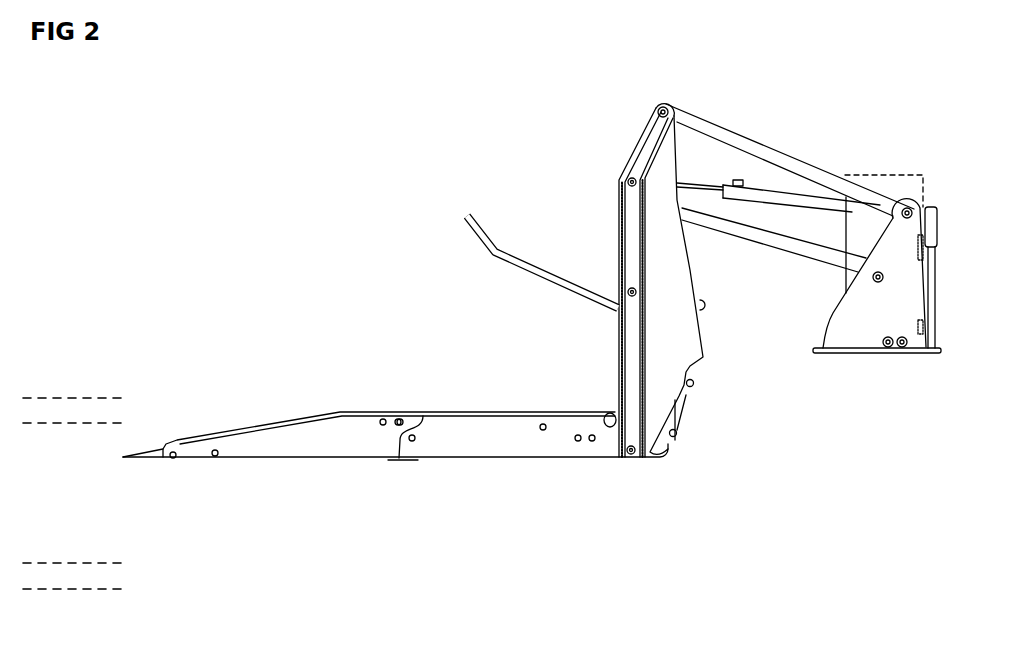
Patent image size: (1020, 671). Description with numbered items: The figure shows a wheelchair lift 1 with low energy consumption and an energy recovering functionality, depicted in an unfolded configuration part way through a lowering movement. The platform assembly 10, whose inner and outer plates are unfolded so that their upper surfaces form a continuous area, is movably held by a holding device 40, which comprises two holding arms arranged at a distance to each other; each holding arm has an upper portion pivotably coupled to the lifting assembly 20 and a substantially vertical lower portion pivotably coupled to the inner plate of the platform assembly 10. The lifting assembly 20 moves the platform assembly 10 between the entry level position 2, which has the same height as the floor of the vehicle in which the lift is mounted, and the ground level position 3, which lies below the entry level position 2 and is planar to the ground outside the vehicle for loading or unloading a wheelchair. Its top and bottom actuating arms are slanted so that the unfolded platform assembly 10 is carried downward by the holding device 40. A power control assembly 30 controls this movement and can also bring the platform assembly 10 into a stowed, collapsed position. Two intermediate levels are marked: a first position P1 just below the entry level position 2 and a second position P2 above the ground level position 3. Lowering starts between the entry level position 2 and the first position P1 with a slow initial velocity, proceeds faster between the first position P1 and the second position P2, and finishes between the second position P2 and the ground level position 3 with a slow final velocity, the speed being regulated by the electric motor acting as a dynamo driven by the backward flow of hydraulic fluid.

The wheelchair lift 1 is at (366, 140).
The entry level position 2 is at (58, 396).
The ground level position 3 is at (58, 591).
The platform assembly 10 is at (423, 411).
The lifting assembly 20 is at (787, 150).
The power control assembly 30 is at (890, 180).
The holding device 40 is at (604, 203).
The first position P1 is at (88, 424).
The second position P2 is at (89, 563).